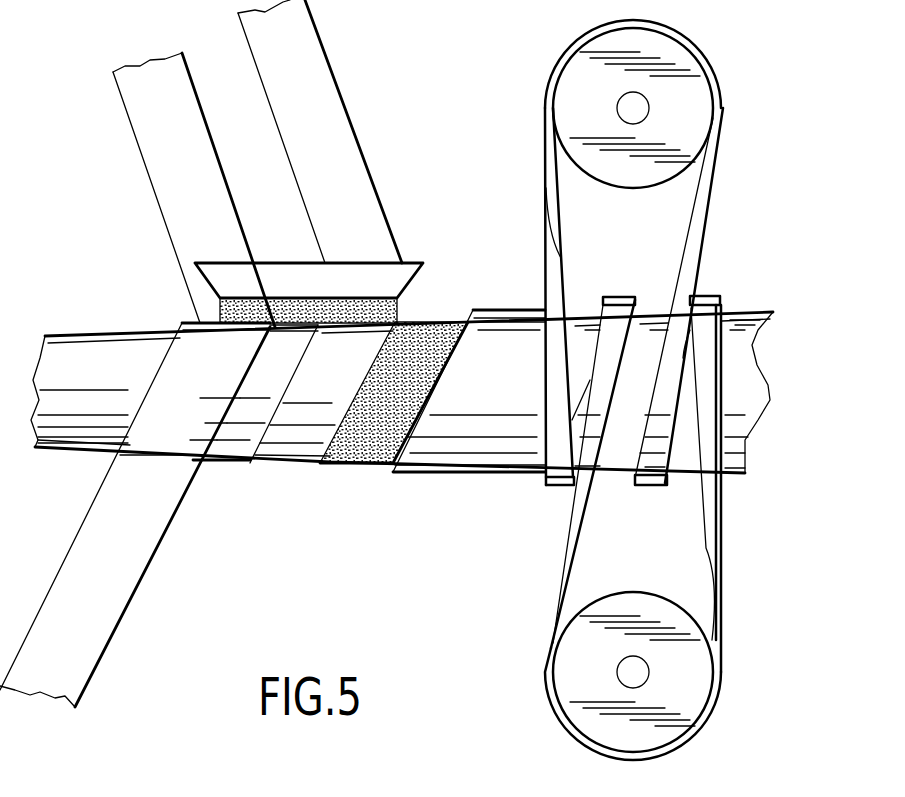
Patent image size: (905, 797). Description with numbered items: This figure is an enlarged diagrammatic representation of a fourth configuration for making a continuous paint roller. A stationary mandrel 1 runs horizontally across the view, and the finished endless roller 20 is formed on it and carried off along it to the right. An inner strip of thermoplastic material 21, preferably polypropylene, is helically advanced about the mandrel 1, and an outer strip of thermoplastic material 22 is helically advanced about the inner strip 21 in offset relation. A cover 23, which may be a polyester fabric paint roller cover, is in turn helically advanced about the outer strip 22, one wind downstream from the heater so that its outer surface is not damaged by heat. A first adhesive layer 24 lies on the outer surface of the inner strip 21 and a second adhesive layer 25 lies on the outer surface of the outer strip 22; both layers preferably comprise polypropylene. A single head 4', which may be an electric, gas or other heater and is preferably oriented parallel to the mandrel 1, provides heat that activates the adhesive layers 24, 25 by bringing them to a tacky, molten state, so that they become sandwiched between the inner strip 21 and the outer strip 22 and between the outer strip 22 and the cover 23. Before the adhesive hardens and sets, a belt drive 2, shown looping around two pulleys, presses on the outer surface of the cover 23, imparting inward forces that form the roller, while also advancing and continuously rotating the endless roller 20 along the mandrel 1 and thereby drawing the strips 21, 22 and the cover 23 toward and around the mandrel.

The mandrel 1 is at (65, 365).
The belt drive 2 is at (558, 238).
The head 4' is at (309, 269).
The roller 20 is at (737, 320).
The inner strip of thermoplastic material 21 is at (115, 632).
The outer strip of thermoplastic material 22 is at (138, 97).
The cover 23 is at (312, 72).
The first adhesive layer 24 is at (223, 462).
The second adhesive layer 25 is at (343, 443).